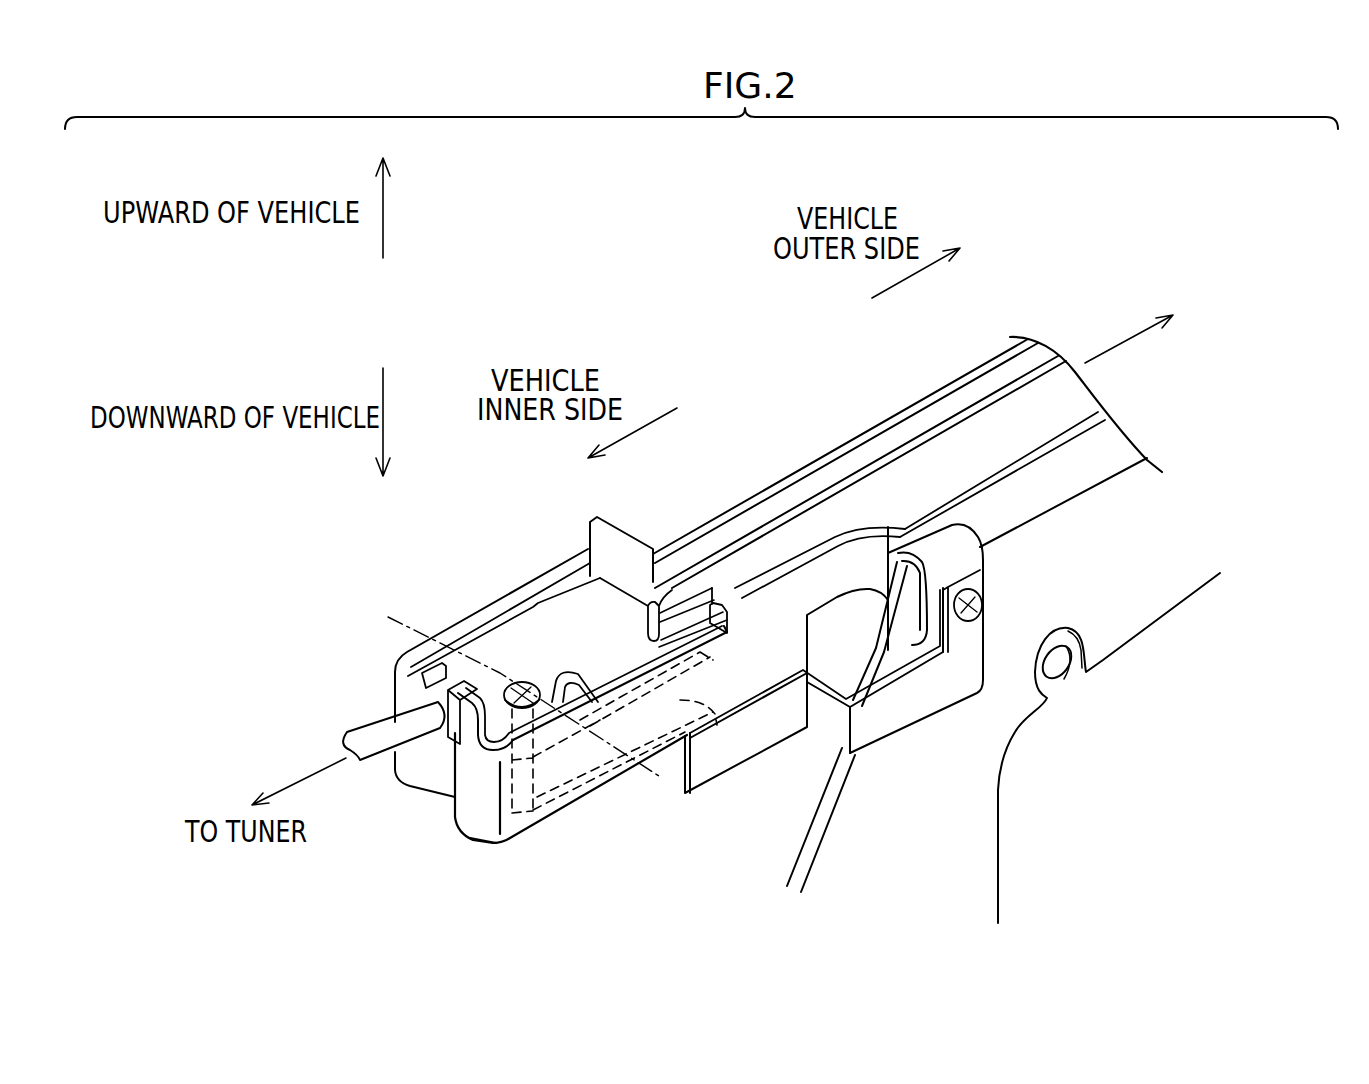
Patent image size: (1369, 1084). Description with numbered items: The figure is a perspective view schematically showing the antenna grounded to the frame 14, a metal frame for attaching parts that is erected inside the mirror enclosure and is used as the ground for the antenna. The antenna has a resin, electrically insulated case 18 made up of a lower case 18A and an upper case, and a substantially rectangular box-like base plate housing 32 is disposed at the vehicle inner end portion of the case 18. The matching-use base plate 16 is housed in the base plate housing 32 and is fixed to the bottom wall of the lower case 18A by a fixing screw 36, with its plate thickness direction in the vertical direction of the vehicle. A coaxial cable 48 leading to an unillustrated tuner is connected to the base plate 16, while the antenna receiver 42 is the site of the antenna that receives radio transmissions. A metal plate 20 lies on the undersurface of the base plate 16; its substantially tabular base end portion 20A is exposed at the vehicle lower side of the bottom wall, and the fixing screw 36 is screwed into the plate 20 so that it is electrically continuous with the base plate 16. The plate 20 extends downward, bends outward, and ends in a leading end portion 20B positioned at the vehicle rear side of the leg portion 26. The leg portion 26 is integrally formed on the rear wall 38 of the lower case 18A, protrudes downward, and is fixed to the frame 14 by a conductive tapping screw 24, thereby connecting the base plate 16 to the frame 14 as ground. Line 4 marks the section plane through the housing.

The frame 14 is at (865, 785).
The matching-use base plate 16 is at (553, 636).
The case 18 is at (574, 826).
The lower case 18A is at (490, 826).
The plate 20 is at (710, 770).
The base end portion 20A is at (694, 697).
The leading end portion 20B is at (978, 628).
The tapping screw 24 is at (974, 635).
The leg portion 26 is at (927, 645).
The base plate housing 32 is at (435, 650).
The fixing screw 36 is at (522, 683).
The rear wall 38 is at (1063, 472).
The antenna receiver 42 is at (1196, 358).
The coaxial cable 48 is at (387, 755).
The section line 4 is at (386, 618).